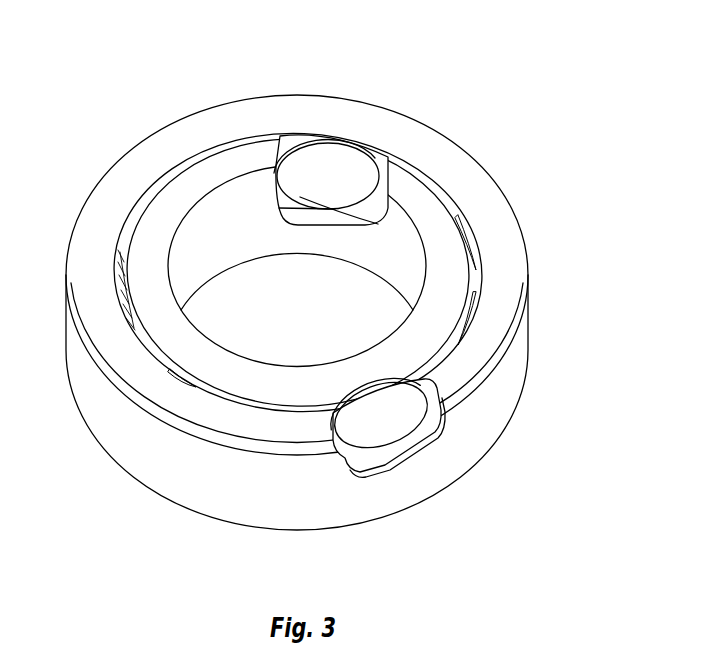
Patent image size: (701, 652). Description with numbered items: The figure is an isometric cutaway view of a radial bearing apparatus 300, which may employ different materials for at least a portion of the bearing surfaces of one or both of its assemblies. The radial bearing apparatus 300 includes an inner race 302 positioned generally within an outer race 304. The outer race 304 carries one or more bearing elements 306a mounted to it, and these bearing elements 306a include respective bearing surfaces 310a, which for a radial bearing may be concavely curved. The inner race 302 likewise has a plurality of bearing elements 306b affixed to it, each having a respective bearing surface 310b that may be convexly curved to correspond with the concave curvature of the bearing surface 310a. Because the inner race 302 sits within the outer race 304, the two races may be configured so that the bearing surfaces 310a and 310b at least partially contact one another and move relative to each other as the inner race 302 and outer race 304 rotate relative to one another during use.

The radial bearing apparatus 300 is at (472, 77).
The inner race 302 is at (225, 175).
The outer race 304 is at (177, 473).
The bearing elements 306a is at (340, 145).
The bearing elements 306b is at (405, 410).
The bearing surface 310a is at (358, 185).
The bearing surface 310b is at (373, 437).